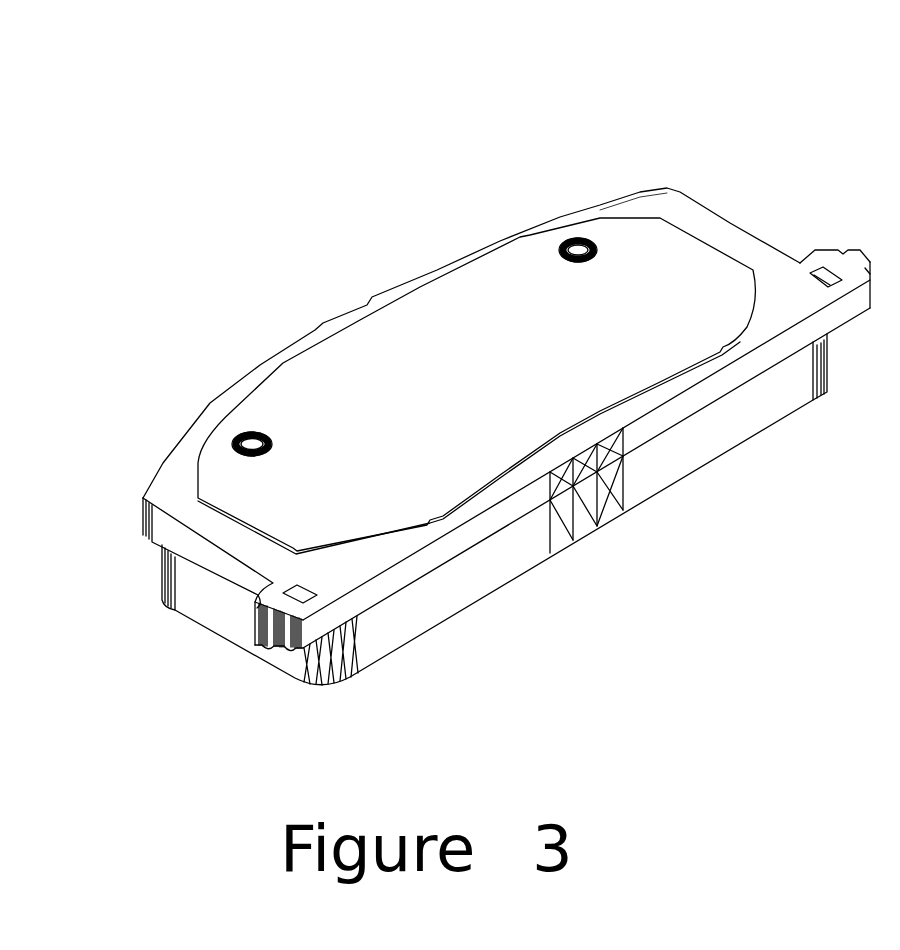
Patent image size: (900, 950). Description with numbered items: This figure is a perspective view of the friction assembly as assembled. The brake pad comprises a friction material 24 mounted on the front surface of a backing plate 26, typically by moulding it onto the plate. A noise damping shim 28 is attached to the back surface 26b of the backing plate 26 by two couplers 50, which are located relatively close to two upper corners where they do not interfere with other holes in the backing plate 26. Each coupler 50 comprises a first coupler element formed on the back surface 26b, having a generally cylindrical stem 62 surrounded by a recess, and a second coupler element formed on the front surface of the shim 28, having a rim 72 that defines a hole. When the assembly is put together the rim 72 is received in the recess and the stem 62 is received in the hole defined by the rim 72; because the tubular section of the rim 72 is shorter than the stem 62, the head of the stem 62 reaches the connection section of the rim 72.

The friction material 24 is at (755, 442).
The backing plate 26 is at (688, 162).
The back surface 26b is at (732, 213).
The noise damping shim 28 is at (420, 250).
The coupler 50 is at (612, 160).
The stem 62 is at (228, 413).
The rim 72 is at (207, 423).